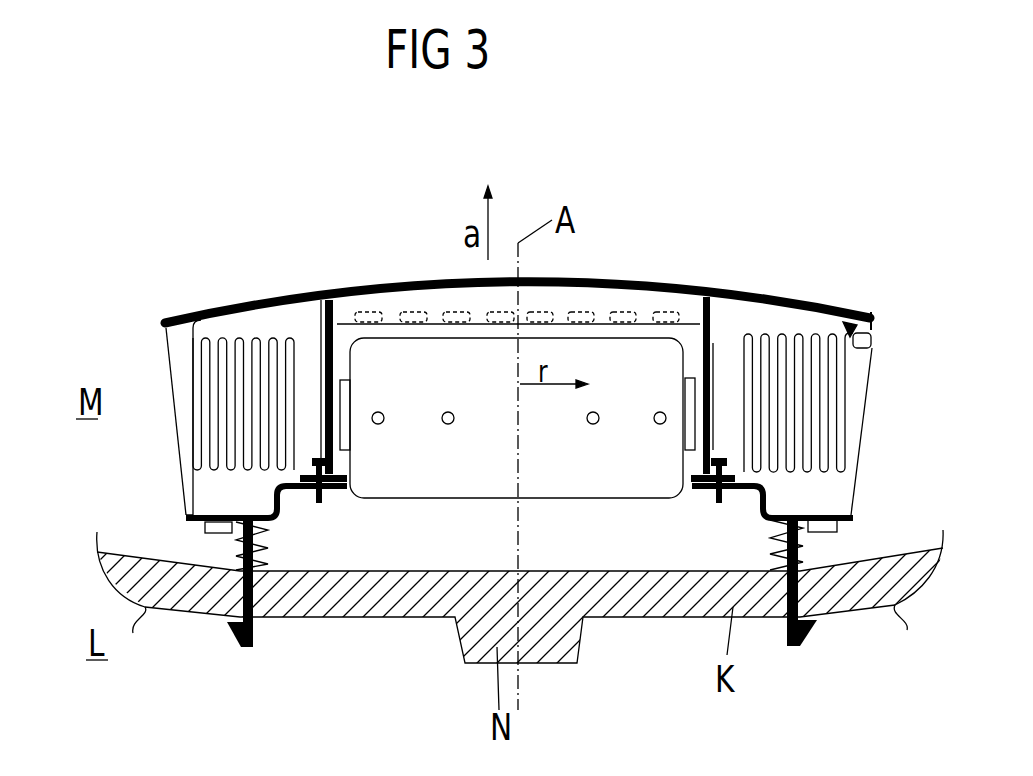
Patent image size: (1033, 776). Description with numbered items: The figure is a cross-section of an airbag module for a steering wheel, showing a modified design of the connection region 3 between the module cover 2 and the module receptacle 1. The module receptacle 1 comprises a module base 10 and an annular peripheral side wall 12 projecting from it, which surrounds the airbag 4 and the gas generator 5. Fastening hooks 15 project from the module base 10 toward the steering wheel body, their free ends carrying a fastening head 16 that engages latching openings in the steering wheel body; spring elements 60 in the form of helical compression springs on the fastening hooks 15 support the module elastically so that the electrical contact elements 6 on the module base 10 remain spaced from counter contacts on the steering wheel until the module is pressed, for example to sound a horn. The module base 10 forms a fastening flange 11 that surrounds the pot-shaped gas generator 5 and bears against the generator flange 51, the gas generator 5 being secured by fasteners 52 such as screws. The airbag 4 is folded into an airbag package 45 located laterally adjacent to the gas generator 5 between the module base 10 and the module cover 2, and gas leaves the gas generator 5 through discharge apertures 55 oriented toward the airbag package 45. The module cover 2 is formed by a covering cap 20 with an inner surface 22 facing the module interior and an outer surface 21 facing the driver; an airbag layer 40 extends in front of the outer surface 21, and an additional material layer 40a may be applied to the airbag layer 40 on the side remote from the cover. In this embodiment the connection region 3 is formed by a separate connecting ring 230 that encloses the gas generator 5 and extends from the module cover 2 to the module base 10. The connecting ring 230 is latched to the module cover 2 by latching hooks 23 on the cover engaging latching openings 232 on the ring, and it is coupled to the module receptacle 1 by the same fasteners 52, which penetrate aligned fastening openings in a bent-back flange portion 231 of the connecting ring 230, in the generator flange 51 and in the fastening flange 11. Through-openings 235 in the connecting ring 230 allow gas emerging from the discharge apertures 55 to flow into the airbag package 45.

The module receptacle 1 is at (282, 524).
The module cover 2 is at (872, 345).
The connection region 3 is at (722, 414).
The airbag 4 is at (186, 362).
The gas generator 5 is at (597, 505).
The electrical contact elements 6 is at (218, 532).
The module base 10 is at (186, 503).
The fastening flange 11 is at (336, 488).
The side wall 12 is at (178, 444).
The fastening hooks 15 is at (252, 623).
The fastening head 16 is at (237, 640).
The covering cap 20 is at (871, 316).
The outer surface 21 is at (643, 283).
The inner surface 22 is at (662, 300).
The latching hooks 23 is at (706, 294).
The airbag layer 40 is at (322, 296).
The additional material layer 40a is at (307, 297).
The airbag package 45 is at (193, 402).
The generator flange 51 is at (345, 477).
The fasteners 52 is at (718, 507).
The discharge apertures 55 is at (450, 424).
The spring elements 60 is at (265, 550).
The connecting ring 230 is at (704, 392).
The bent-back flange portion 231 is at (730, 463).
The latching openings 232 is at (450, 311).
The through-openings 235 is at (848, 320).